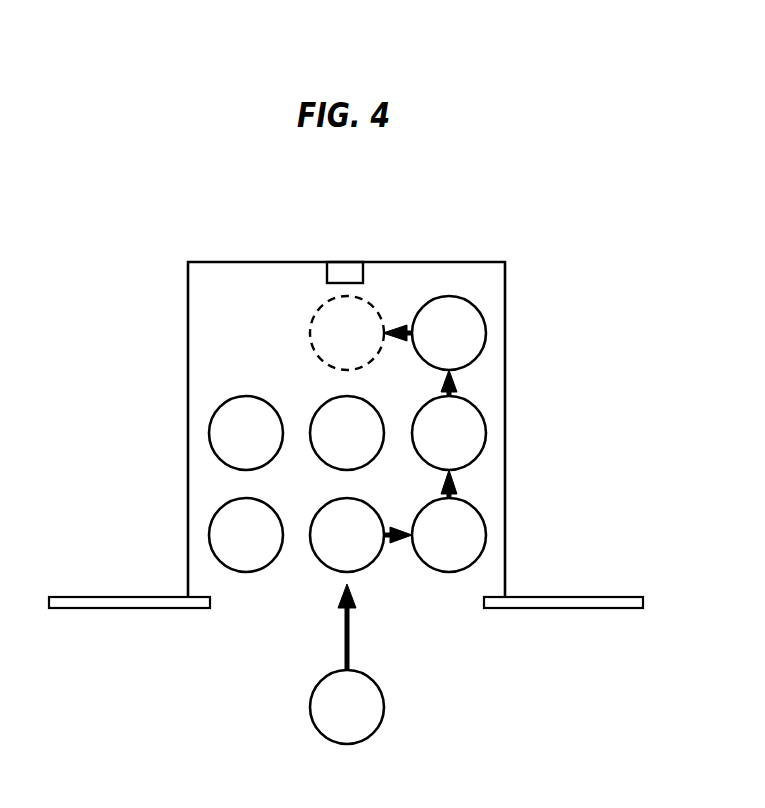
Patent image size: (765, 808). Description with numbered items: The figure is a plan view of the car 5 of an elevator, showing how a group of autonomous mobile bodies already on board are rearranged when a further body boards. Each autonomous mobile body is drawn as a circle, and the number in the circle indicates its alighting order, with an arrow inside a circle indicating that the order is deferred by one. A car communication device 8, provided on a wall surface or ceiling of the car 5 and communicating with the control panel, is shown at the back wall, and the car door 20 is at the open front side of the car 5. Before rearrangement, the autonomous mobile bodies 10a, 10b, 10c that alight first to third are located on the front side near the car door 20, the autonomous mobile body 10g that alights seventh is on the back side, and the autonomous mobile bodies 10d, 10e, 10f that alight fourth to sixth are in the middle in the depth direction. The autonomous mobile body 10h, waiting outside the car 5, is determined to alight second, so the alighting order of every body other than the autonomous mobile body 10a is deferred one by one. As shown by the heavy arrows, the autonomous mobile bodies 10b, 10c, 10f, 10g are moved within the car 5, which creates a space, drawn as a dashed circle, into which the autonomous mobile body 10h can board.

The car 5 is at (476, 262).
The car communication device 8 is at (327, 273).
The car door 20 is at (103, 608).
The autonomous mobile body 10a is at (209, 535).
The autonomous mobile body 10b is at (323, 568).
The autonomous mobile body 10c is at (486, 535).
The autonomous mobile body 10d is at (209, 433).
The autonomous mobile body 10e is at (320, 403).
The autonomous mobile body 10f is at (486, 433).
The autonomous mobile body 10g is at (486, 333).
The autonomous mobile body 10h is at (384, 707).